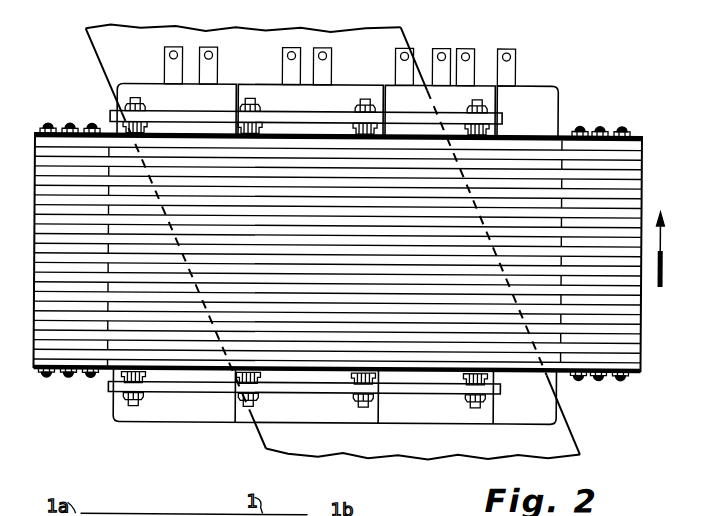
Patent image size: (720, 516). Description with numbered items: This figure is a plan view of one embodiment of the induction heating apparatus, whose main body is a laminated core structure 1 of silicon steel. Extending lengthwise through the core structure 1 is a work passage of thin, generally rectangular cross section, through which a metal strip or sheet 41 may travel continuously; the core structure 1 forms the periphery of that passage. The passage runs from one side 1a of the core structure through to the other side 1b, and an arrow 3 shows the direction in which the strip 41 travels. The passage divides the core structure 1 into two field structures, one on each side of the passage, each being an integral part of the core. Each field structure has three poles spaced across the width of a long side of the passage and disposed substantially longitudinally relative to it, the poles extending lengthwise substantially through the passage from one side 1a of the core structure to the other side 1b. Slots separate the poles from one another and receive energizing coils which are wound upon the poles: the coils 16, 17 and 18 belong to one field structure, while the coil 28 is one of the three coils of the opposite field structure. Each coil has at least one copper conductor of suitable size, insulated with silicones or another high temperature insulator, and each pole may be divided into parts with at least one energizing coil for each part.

The laminated core structure 1 is at (350, 256).
The one side of the core structure 1a is at (528, 369).
The other side of the core structure 1b is at (537, 118).
The arrow 3 is at (662, 239).
The energizing coil 16 is at (393, 90).
The energizing coil 17 is at (263, 89).
The energizing coil 18 is at (152, 89).
The energizing coil 28 is at (553, 105).
The metal strip or sheet 41 is at (97, 61).